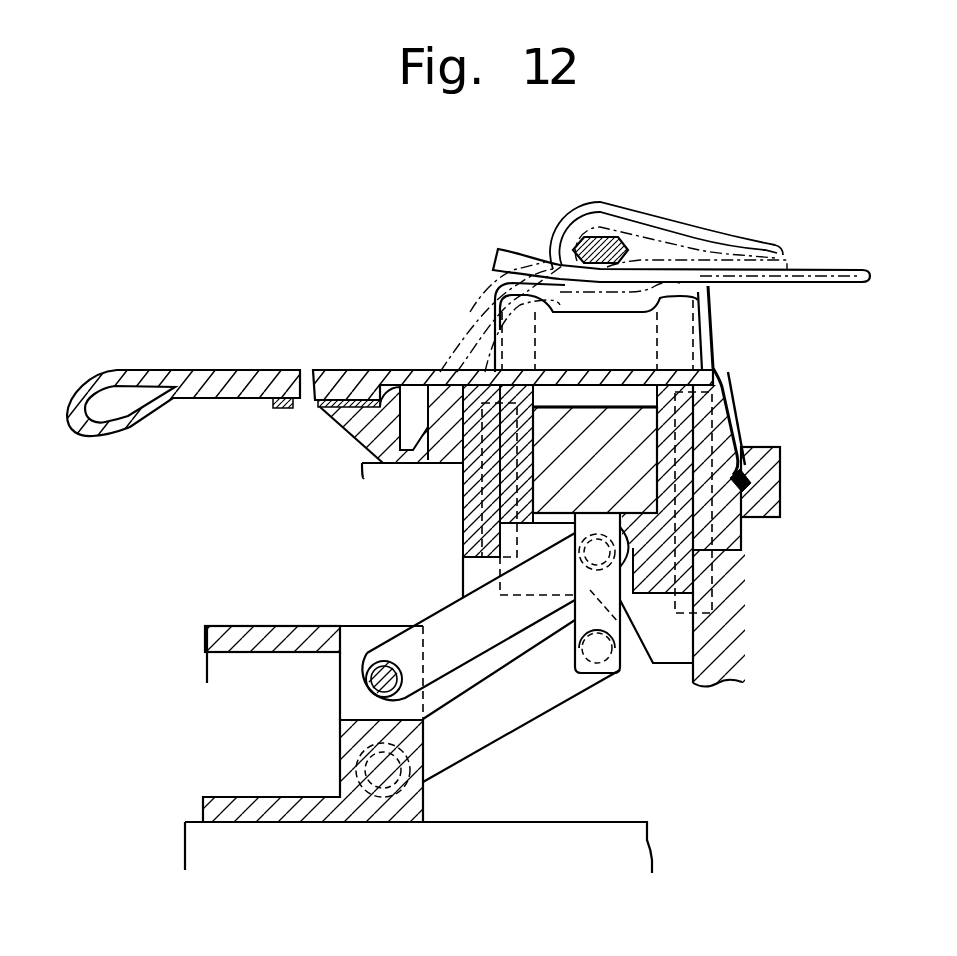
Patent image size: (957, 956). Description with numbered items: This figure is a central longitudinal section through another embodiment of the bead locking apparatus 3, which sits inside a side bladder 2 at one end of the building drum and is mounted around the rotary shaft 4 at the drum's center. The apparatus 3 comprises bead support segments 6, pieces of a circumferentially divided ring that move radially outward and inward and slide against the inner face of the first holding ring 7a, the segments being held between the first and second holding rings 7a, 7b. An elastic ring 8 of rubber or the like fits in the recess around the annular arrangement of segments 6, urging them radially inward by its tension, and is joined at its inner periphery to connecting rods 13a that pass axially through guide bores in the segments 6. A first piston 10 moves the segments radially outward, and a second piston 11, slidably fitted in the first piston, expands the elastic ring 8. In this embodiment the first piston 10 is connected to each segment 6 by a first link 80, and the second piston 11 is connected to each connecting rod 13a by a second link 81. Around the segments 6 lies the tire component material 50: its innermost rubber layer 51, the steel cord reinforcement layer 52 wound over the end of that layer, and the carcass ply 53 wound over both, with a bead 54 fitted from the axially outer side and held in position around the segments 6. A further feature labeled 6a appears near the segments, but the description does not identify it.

The side bladder 2 is at (250, 368).
The bead locking apparatus 3 is at (662, 729).
The rotary shaft 4 is at (590, 833).
The bead support segments 6 is at (683, 427).
The clip 6a is at (522, 403).
The first holding ring 7a is at (710, 617).
The second holding ring 7b is at (450, 372).
The elastic ring 8 is at (617, 430).
The first piston 10 is at (313, 624).
The second piston 11 is at (290, 797).
The connecting rods 13a is at (623, 600).
The tire component material 50 is at (803, 257).
The innermost rubber layer 51 is at (815, 285).
The steel cord reinforcement layer 52 is at (540, 262).
The carcass ply 53 is at (847, 257).
The beads 54 is at (623, 242).
The first link 80 is at (457, 618).
The second link 81 is at (552, 710).